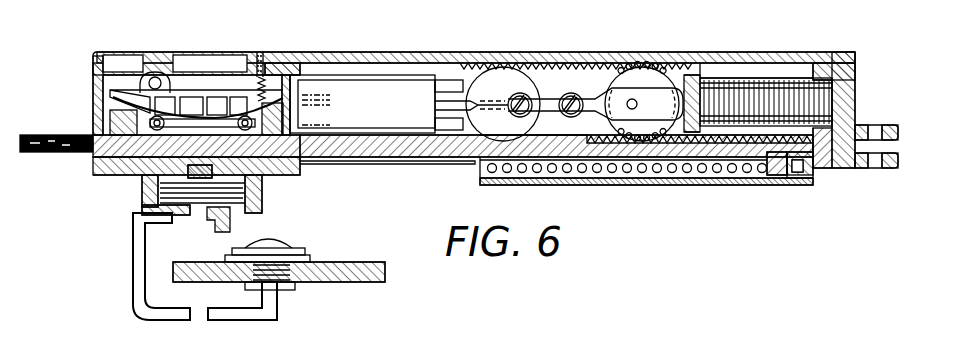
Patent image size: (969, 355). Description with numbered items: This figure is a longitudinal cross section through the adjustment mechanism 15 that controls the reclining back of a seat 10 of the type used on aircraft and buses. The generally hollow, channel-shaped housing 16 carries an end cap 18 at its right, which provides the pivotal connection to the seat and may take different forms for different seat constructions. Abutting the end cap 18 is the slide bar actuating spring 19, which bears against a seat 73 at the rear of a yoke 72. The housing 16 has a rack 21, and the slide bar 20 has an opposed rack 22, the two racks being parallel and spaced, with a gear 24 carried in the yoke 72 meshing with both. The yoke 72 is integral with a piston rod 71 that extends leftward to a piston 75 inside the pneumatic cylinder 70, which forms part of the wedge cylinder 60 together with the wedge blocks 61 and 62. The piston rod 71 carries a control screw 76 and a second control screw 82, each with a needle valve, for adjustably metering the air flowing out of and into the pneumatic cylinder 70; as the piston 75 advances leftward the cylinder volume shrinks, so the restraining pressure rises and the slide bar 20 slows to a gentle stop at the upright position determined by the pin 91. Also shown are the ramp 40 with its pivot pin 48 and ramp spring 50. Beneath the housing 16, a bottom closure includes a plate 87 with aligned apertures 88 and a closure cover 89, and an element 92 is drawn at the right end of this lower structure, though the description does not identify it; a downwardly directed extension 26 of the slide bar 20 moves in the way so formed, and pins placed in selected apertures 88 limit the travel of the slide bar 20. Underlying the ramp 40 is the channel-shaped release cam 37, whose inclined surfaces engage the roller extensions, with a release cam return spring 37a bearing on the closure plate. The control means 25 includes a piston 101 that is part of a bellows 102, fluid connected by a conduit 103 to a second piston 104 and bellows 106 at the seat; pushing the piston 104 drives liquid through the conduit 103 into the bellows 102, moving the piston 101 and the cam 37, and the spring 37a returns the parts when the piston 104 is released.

The recliner-type seat 10 is at (360, 278).
The adjustment mechanism 15 is at (392, 181).
The housing 16 is at (378, 52).
The end cap 18 is at (847, 172).
The slide bar actuating spring 19 is at (727, 80).
The slide bar 20 is at (360, 142).
The rack 21 is at (587, 75).
The rack 22 is at (590, 130).
The gear 24 is at (640, 80).
The control means 25 is at (124, 280).
The downwardly directed extension 26 is at (765, 178).
The release cam 37 is at (140, 181).
The release cam return spring 37a is at (247, 208).
The ramp 40 is at (190, 97).
The pivot pin 48 is at (157, 76).
The ramp spring 50 is at (268, 90).
The wedge cylinder 60 is at (307, 62).
The wedge block 61 is at (115, 118).
The wedge block 62 is at (283, 175).
The pneumatic cylinder 70 is at (320, 80).
The piston rod 71 is at (548, 92).
The yoke 72 is at (632, 110).
The seat 73 is at (690, 75).
The piston 75 is at (452, 80).
The control screw 76 is at (517, 94).
The control screw 82 is at (565, 92).
The plate 87 is at (667, 178).
The aligned apertures 88 is at (676, 172).
The closure cover 89 is at (720, 178).
The pin 91 is at (480, 170).
The end block 92 is at (794, 176).
The piston 101 is at (213, 218).
The bellows 102 is at (158, 201).
The conduit 103 is at (147, 278).
The second piston 104 is at (283, 240).
The bellows 106 is at (280, 282).